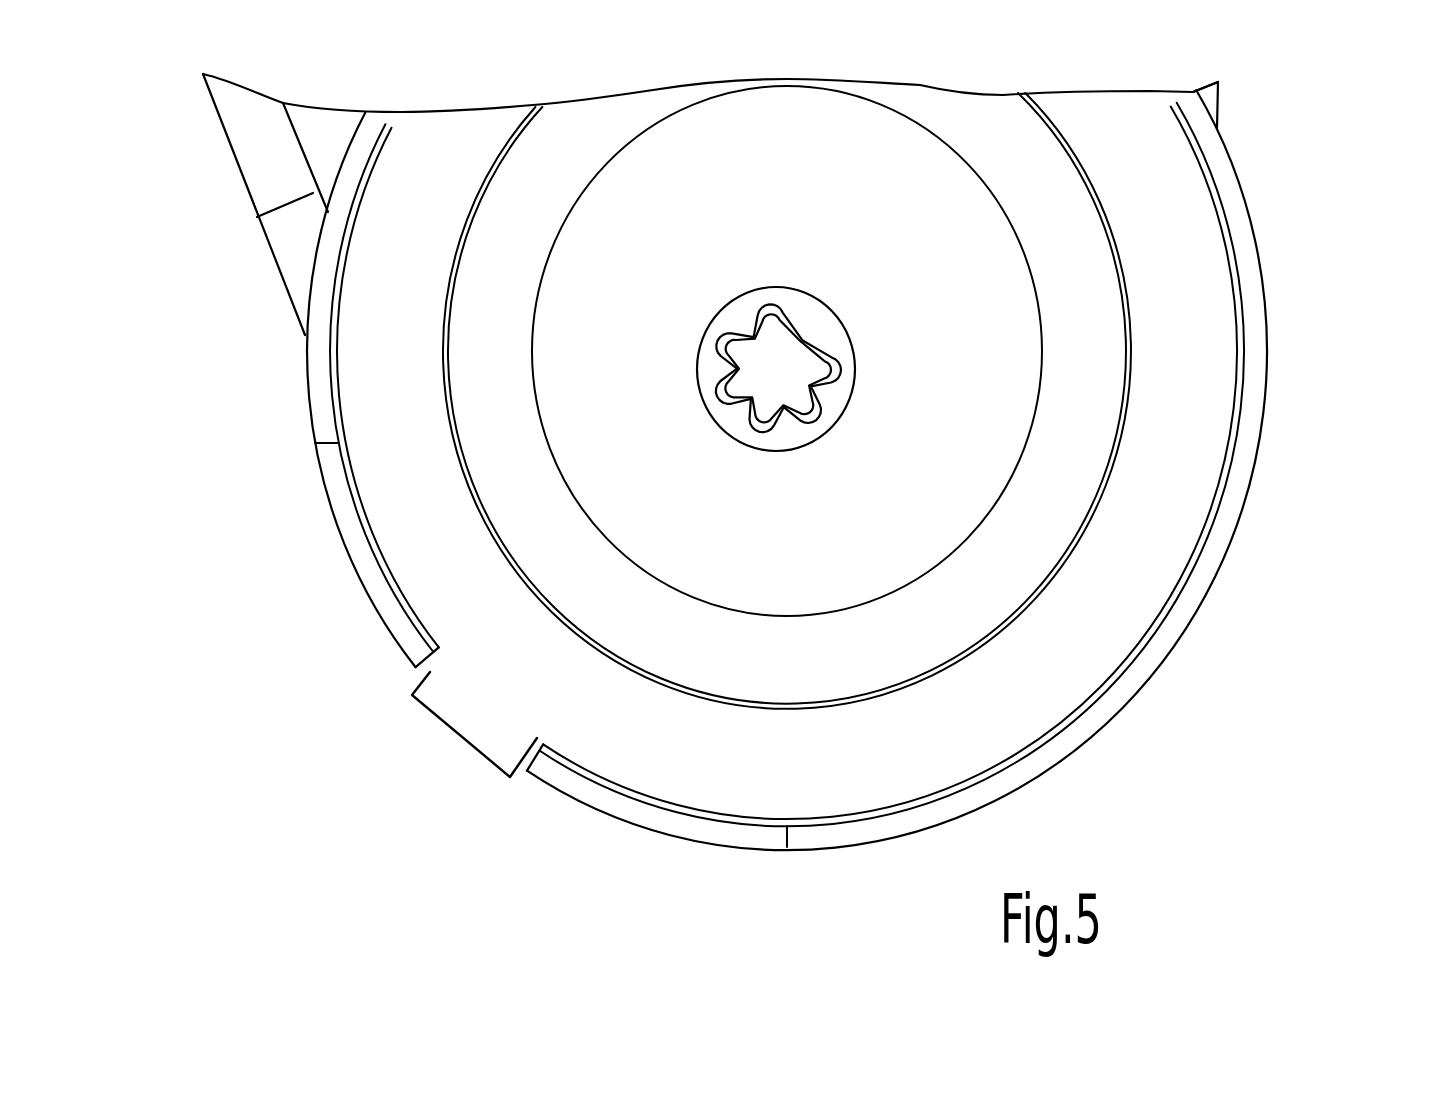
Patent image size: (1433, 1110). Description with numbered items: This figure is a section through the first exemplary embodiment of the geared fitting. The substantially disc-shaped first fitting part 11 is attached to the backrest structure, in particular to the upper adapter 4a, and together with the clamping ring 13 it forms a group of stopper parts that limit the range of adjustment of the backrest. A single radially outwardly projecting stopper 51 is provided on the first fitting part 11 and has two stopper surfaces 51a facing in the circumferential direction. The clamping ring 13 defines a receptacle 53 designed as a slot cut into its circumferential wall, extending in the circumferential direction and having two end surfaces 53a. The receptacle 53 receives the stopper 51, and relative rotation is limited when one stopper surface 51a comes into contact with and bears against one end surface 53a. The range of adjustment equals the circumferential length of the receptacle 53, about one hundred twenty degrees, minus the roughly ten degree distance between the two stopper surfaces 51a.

The upper adapter 4a is at (278, 193).
The first fitting part 11 is at (1152, 458).
The clamping ring 13 is at (316, 388).
The stopper 51 is at (488, 712).
The stopper surface 51a is at (419, 674).
The receptacle 53 is at (357, 563).
The end surface 53a is at (322, 447).